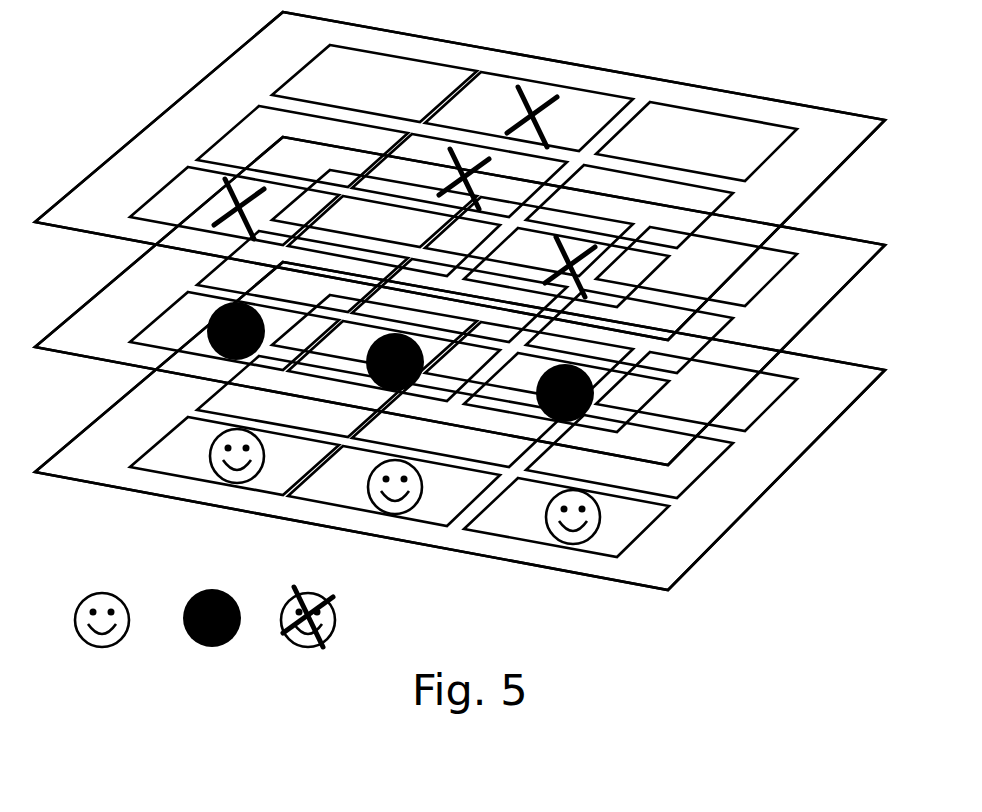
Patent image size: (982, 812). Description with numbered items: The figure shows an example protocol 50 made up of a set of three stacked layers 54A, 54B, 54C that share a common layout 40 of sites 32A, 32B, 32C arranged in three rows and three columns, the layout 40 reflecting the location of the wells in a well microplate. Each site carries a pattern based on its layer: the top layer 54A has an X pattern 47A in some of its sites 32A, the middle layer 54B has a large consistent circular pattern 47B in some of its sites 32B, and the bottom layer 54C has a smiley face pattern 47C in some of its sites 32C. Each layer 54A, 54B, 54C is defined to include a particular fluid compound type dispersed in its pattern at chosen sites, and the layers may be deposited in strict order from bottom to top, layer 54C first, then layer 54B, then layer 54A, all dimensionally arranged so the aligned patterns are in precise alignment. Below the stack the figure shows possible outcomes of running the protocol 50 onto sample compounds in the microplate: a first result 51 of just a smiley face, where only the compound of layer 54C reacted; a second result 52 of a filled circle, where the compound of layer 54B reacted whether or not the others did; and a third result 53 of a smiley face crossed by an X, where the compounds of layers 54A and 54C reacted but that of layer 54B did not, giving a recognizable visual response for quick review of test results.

The protocol 50 is at (167, 65).
The common layout 40 is at (805, 104).
The first layer 54A is at (460, 176).
The second layer 54B is at (460, 301).
The third layer 54C is at (460, 426).
The sites of first layer 32A is at (760, 162).
The sites of second layer 32B is at (719, 266).
The sites of third layer 32C is at (719, 391).
The X pattern 47A is at (549, 98).
The circular pattern 47B is at (453, 363).
The smiley face pattern 47C is at (454, 488).
The first result 51 is at (97, 596).
The second result 52 is at (205, 592).
The third result 53 is at (293, 598).